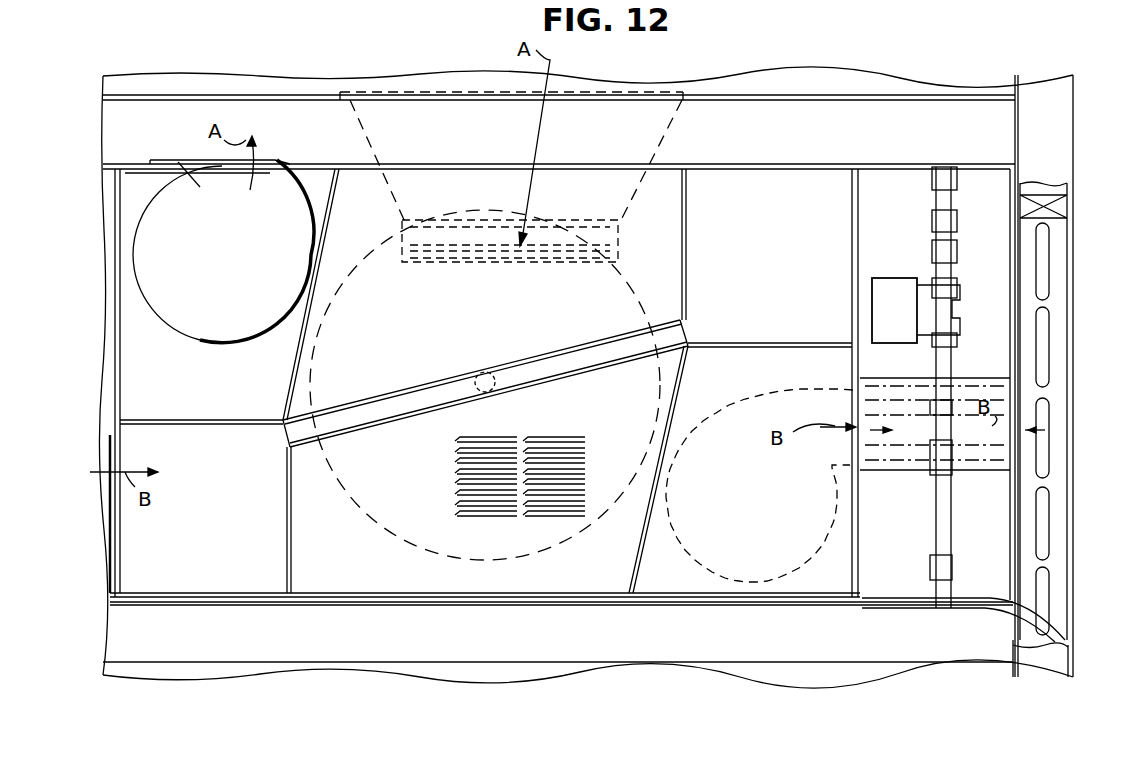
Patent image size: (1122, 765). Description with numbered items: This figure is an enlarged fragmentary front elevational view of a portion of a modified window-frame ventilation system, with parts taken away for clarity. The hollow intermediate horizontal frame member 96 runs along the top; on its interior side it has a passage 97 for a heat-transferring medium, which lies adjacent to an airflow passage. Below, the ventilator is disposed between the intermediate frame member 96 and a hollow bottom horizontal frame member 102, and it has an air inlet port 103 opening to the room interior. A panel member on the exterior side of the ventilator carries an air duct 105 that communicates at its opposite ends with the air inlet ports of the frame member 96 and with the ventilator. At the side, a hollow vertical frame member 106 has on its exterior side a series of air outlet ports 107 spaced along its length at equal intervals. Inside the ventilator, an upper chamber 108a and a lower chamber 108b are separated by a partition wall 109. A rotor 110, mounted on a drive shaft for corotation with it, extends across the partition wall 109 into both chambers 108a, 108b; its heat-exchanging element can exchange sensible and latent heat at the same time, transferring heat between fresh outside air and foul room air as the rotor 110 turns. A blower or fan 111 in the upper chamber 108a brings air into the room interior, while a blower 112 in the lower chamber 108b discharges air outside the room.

The intermediate horizontal frame member 96 is at (760, 118).
The passage for a heat-transferring medium 97 is at (672, 120).
The bottom horizontal frame member 102 is at (313, 662).
The air inlet port 103 is at (470, 515).
The air duct 105 is at (383, 90).
The vertical frame member 106 is at (1057, 492).
The air outlet ports 107 is at (1043, 333).
The upper chamber 108a is at (145, 350).
The lower chamber 108b is at (673, 580).
The partition wall 109 is at (378, 408).
The rotor 110 is at (367, 497).
The blower or fan 111 is at (150, 235).
The blower 112 is at (783, 570).